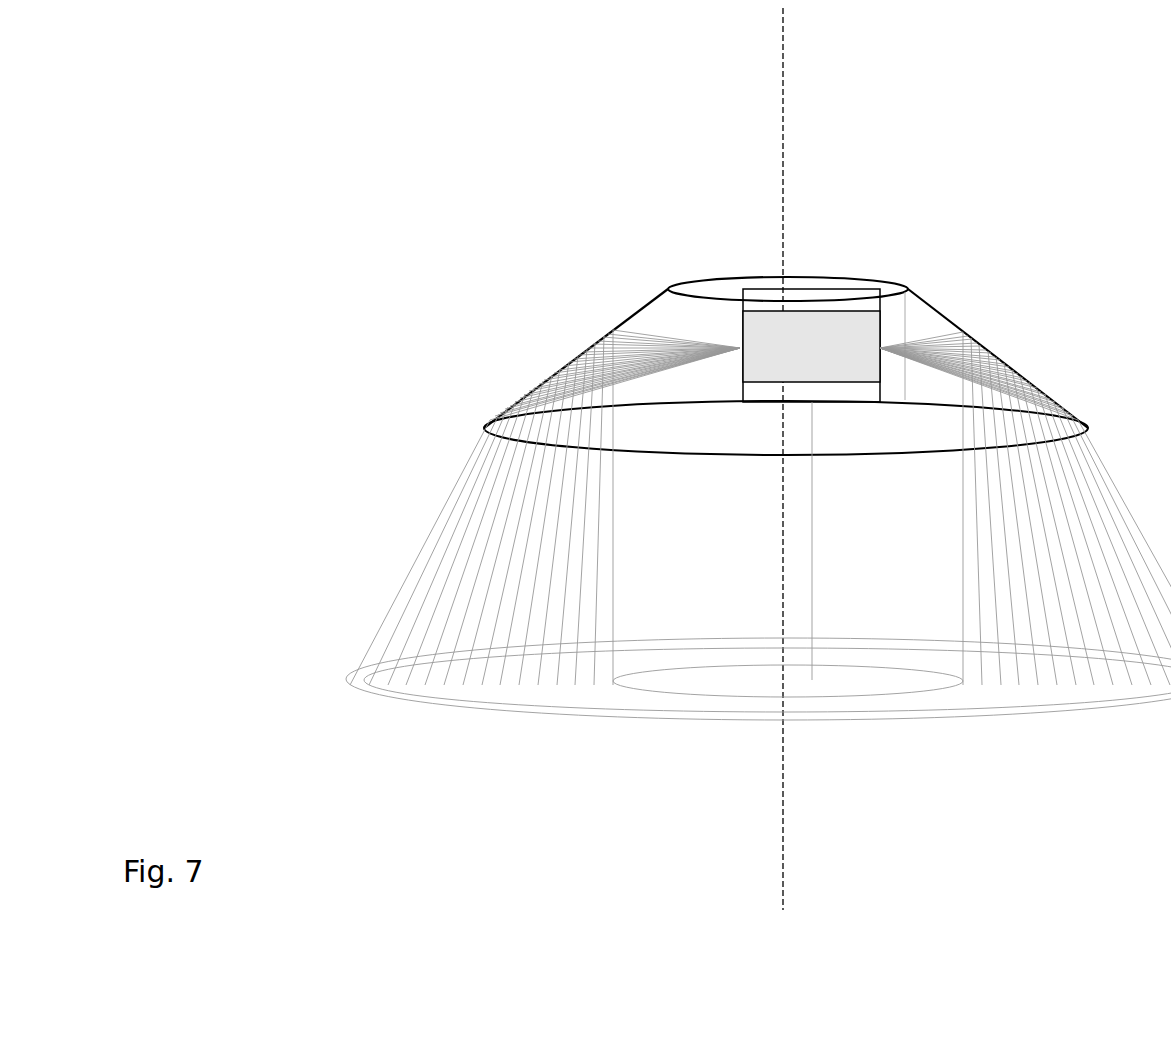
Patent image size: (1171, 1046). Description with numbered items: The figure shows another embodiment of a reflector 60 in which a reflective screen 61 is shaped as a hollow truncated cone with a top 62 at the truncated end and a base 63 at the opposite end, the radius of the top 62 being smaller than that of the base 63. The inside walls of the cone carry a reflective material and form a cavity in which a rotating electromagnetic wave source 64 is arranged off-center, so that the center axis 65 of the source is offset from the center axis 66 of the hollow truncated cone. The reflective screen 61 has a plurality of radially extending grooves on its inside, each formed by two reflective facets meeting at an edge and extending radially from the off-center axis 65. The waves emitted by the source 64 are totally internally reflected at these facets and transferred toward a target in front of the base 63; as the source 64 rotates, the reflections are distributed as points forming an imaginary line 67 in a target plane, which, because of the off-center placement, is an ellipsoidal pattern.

The reflector 60 is at (632, 342).
The reflective screen 61 is at (655, 333).
The top 62 is at (722, 278).
The base 63 is at (482, 430).
The rotating electromagnetic wave source 64 is at (843, 283).
The center axis of the electromagnetic wave source 65 is at (818, 585).
The center axis of the hollow truncated cone 66 is at (782, 780).
The imaginary line 67 is at (368, 698).